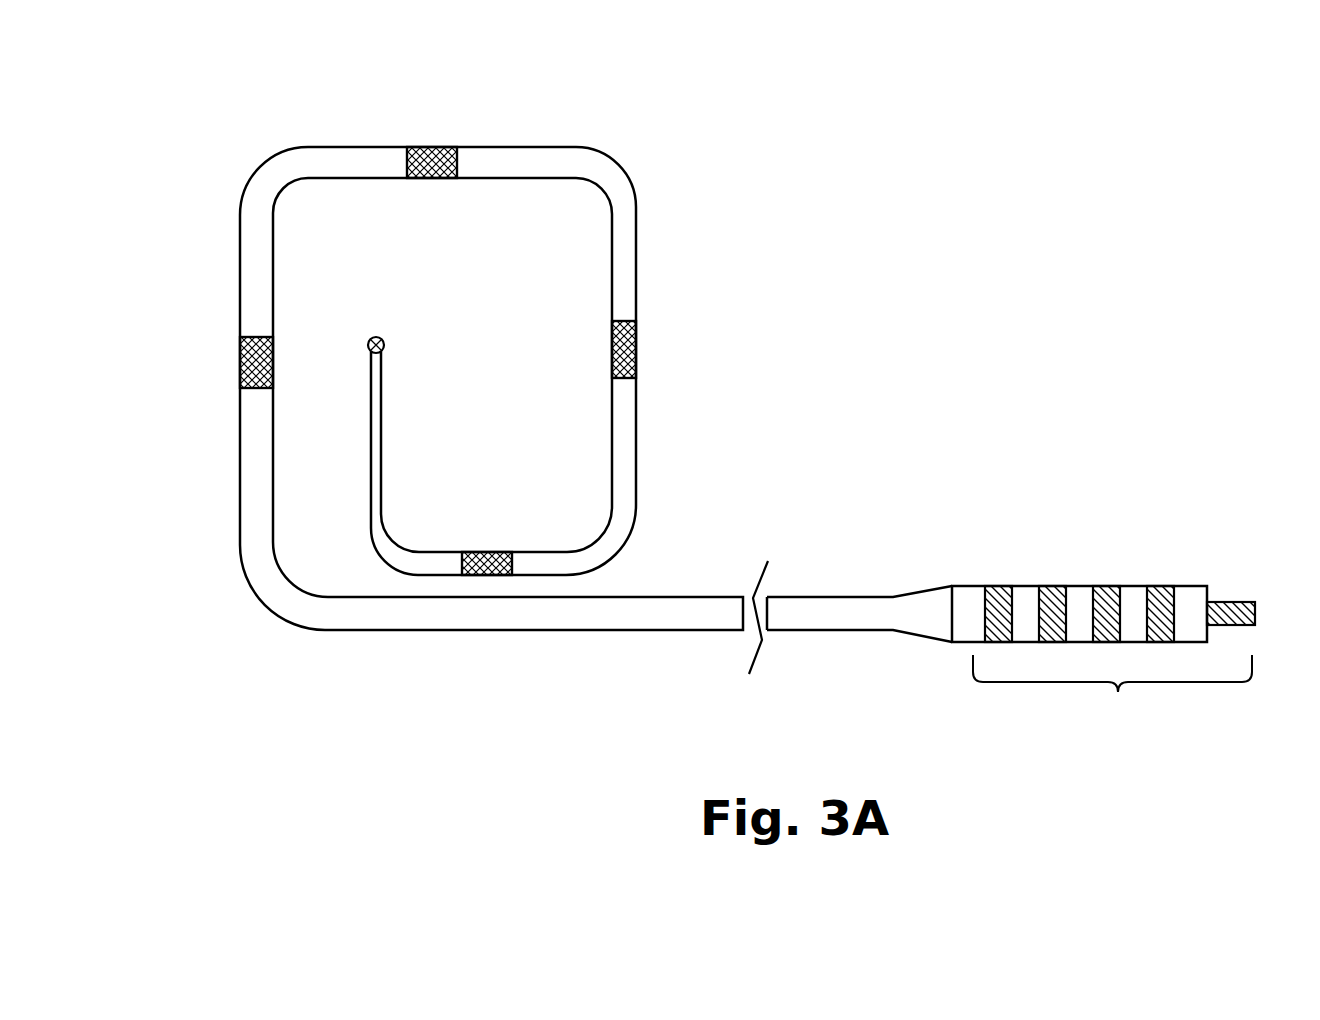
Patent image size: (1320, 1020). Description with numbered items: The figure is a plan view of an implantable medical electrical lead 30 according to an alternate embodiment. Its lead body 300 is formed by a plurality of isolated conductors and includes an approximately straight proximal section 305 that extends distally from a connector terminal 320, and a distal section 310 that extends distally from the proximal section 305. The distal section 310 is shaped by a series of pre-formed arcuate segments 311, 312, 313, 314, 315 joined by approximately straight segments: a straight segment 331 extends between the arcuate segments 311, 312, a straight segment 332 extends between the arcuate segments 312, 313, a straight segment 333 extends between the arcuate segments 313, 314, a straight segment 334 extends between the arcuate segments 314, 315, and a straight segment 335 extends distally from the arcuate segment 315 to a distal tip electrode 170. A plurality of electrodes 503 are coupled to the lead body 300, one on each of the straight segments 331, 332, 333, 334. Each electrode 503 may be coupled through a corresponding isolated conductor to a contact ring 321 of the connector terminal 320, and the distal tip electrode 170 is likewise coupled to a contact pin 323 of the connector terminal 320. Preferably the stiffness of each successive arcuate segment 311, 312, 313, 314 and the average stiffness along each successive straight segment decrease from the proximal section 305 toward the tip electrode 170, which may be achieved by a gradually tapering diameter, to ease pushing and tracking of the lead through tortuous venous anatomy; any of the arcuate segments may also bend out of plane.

The implantable medical electrical lead 30 is at (978, 162).
The distal tip electrode 170 is at (377, 337).
The lead body 300 is at (733, 707).
The proximal section 305 is at (493, 652).
The distal section 310 is at (772, 367).
The pre-formed arcuate segment 311 is at (246, 590).
The pre-formed arcuate segment 312 is at (275, 148).
The pre-formed arcuate segment 313 is at (636, 166).
The pre-formed arcuate segment 314 is at (632, 552).
The pre-formed arcuate segment 315 is at (370, 560).
The connector terminal 320 is at (1102, 655).
The contact ring 321 is at (1160, 586).
The contact pin 323 is at (1228, 602).
The approximately straight segment 331 is at (206, 365).
The approximately straight segment 332 is at (443, 130).
The approximately straight segment 333 is at (655, 327).
The approximately straight segment 334 is at (453, 530).
The approximately straight segment 335 is at (392, 415).
The electrode 503 is at (443, 179).